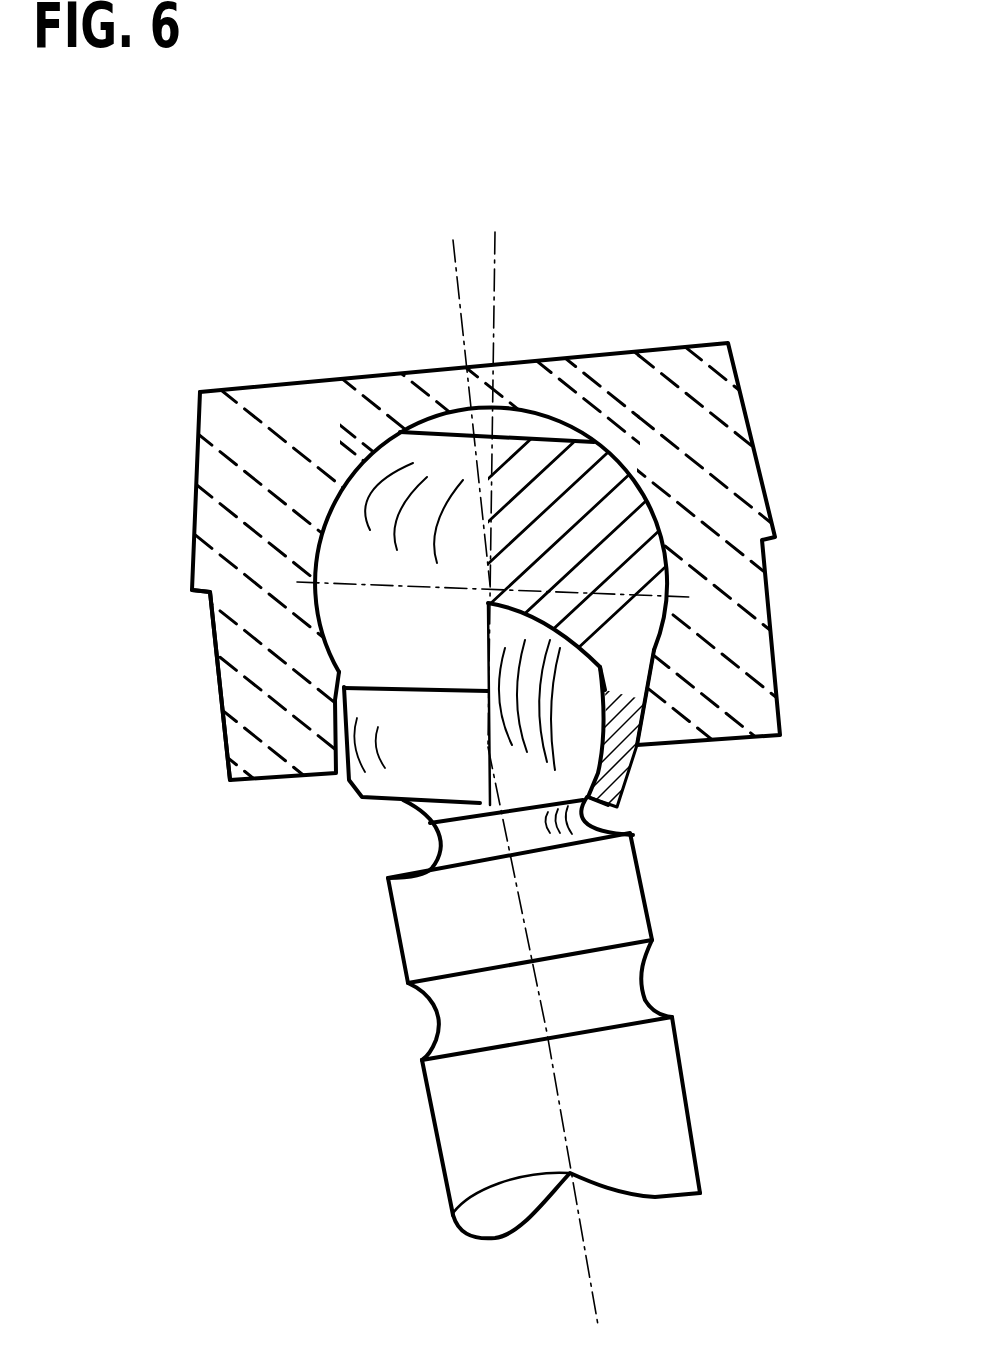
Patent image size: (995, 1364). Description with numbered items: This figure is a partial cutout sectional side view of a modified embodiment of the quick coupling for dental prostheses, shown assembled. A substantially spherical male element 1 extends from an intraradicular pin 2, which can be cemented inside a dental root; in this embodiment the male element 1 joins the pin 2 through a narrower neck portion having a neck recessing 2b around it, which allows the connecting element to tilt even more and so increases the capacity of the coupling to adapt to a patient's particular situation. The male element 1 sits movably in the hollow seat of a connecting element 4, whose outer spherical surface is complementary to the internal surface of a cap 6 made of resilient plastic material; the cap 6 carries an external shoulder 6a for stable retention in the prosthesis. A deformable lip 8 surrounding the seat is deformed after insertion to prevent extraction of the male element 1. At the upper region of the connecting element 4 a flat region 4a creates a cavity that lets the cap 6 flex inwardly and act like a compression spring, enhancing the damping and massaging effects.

The male element 1 is at (563, 727).
The intraradicular pin 2 is at (653, 1086).
The neck recessing 2b is at (590, 808).
The connecting element 4 is at (607, 513).
The flat region 4a is at (512, 435).
The cap 6 is at (238, 524).
The shoulder 6a is at (203, 597).
The lip 8 is at (705, 783).